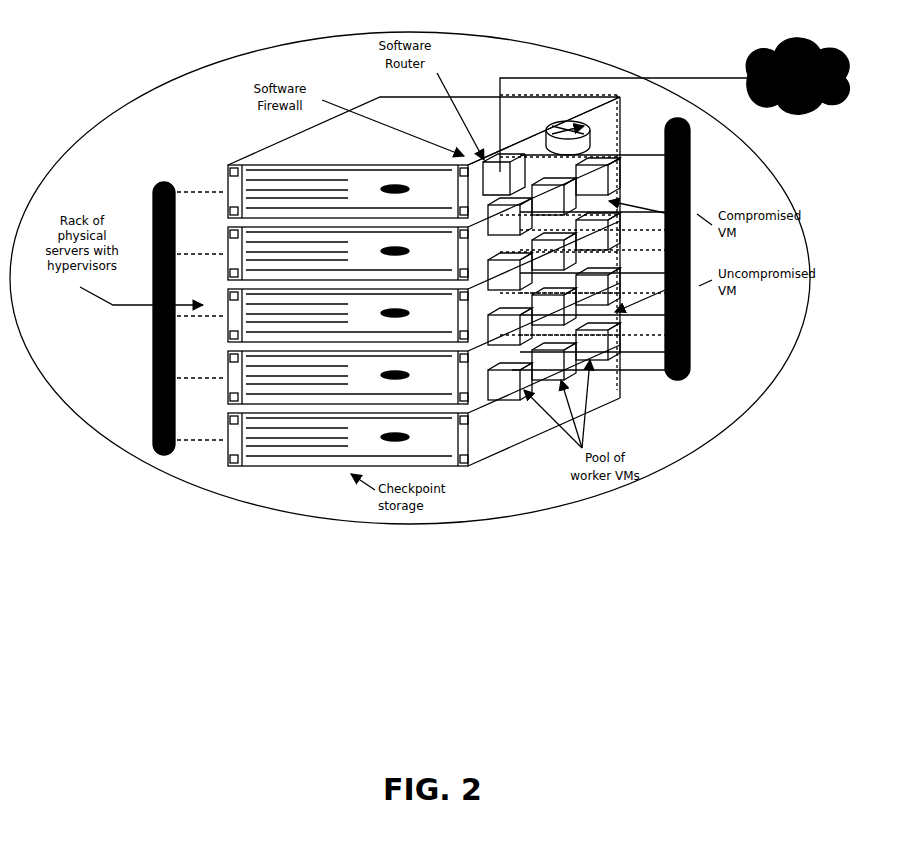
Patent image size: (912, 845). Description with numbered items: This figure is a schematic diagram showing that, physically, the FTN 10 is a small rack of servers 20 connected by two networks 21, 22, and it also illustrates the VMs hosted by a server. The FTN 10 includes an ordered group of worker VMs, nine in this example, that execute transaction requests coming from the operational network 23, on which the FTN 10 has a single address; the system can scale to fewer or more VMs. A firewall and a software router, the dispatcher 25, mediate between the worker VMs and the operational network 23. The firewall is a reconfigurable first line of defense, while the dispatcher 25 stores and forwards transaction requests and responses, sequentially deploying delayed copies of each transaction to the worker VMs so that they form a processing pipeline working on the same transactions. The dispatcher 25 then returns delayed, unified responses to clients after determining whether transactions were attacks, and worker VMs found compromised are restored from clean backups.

The FTN 10 is at (303, 40).
The rack of servers 20 is at (617, 114).
The network 21 is at (691, 156).
The network 22 is at (165, 182).
The operational network 23 is at (778, 42).
The dispatcher 25 is at (574, 122).